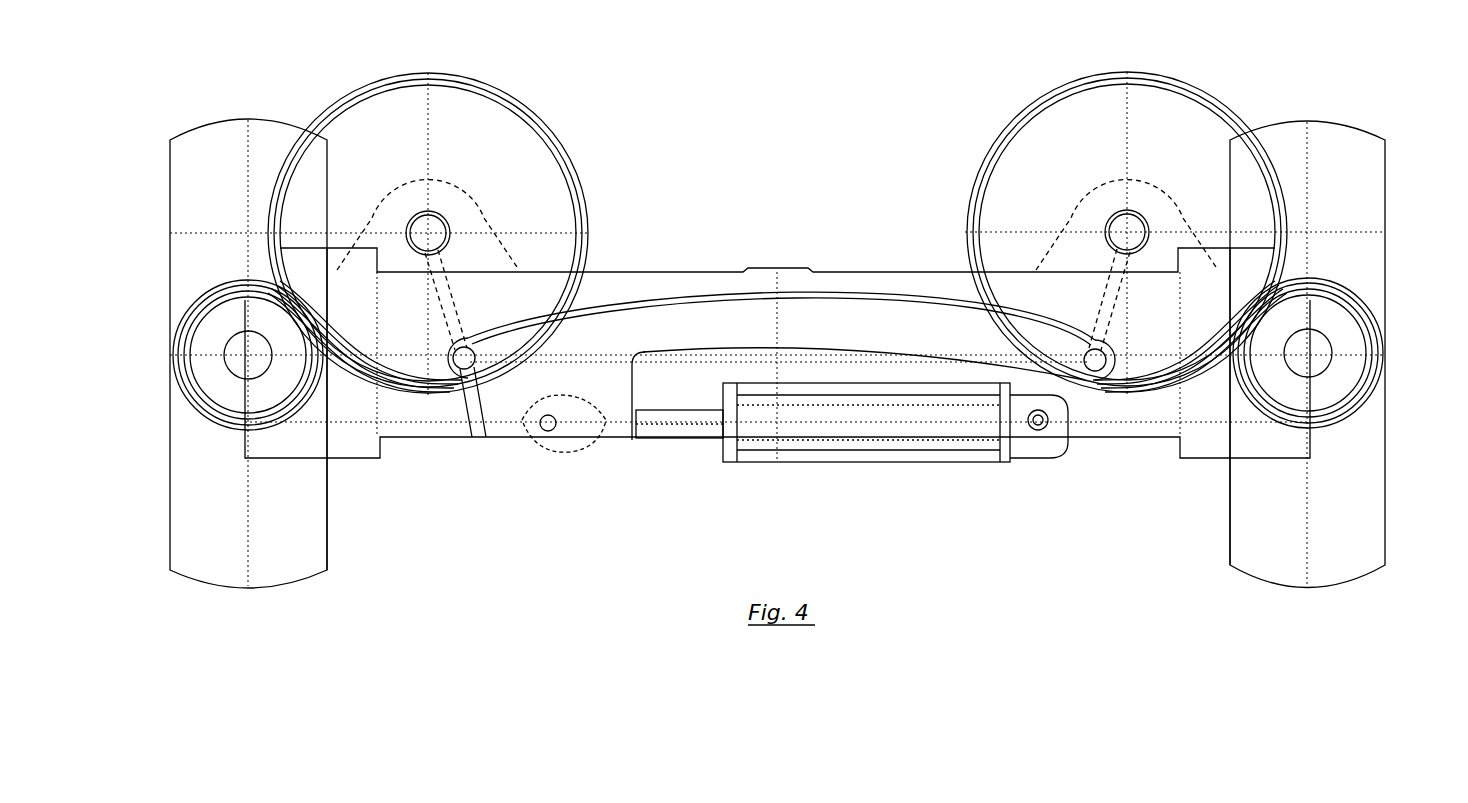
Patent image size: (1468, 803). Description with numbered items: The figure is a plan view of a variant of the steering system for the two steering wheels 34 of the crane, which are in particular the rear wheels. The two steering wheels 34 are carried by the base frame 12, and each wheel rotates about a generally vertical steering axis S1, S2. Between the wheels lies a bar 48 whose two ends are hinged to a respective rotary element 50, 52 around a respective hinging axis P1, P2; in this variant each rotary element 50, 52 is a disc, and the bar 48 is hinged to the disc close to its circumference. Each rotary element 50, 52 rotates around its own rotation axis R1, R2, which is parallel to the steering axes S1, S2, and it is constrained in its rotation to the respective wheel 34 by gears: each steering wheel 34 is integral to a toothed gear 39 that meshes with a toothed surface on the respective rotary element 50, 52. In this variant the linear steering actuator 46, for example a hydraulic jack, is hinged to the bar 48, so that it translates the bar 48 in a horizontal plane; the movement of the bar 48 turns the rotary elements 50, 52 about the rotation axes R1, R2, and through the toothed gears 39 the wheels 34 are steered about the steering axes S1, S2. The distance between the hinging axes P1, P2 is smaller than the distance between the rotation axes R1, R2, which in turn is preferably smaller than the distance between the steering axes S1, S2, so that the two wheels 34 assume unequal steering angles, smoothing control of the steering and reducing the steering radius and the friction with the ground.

The base frame 12 is at (1152, 413).
The steering wheel 34 is at (220, 192).
The toothed gear 39 is at (210, 330).
The linear steering actuator 46 is at (902, 413).
The bar 48 is at (833, 334).
The rotary element 50 is at (439, 138).
The rotary element 52 is at (1142, 138).
The rotation axis R1 is at (432, 232).
The rotation axis R2 is at (1123, 232).
The steering axis S1 is at (248, 355).
The steering axis S2 is at (1308, 355).
The hinging axis P1 is at (463, 363).
The hinging axis P2 is at (1098, 360).